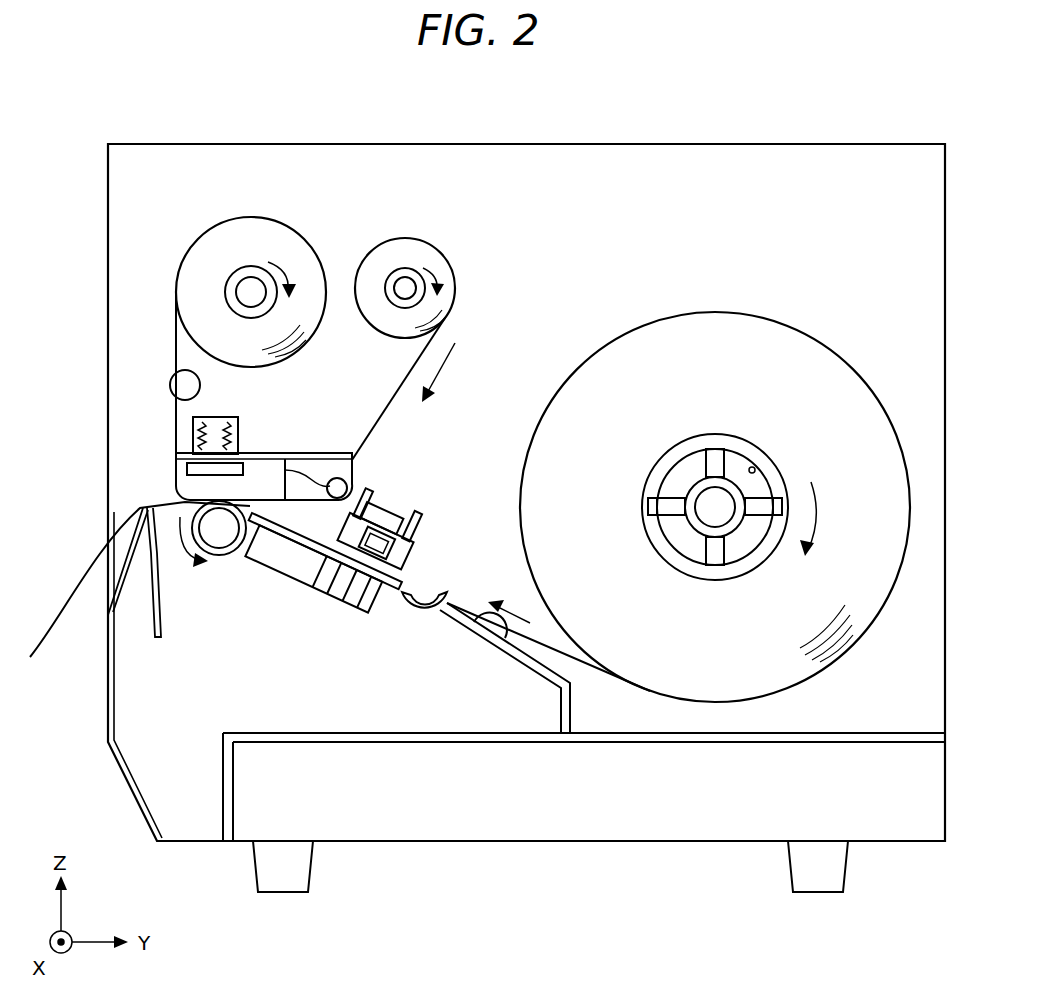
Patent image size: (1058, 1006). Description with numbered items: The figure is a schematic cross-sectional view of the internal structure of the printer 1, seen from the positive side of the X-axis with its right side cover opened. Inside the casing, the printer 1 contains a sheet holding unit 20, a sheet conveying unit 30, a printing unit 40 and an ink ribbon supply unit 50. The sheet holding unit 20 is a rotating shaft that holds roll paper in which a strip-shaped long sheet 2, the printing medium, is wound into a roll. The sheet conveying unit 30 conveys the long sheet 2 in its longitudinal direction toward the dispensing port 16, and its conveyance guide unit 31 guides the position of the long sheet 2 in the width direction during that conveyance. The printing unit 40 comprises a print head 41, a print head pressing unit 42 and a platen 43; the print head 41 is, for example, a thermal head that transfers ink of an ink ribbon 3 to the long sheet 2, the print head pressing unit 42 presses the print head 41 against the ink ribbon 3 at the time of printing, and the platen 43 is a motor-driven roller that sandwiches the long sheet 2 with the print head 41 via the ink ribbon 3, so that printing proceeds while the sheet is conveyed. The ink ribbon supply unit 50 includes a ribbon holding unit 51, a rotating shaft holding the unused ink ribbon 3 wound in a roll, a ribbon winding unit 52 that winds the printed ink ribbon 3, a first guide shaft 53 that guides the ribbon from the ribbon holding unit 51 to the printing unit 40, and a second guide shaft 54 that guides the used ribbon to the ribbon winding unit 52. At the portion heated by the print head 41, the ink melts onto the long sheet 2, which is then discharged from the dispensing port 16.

The printer 1 is at (740, 118).
The long sheet 2 is at (597, 667).
The ink ribbon 3 is at (172, 318).
The dispensing port 16 is at (85, 498).
The sheet holding unit 20 is at (754, 468).
The sheet conveying unit 30 is at (347, 622).
The conveyance guide unit 31 is at (308, 556).
The printing unit 40 is at (278, 432).
The print head 41 is at (185, 458).
The print head pressing unit 42 is at (236, 418).
The platen 43 is at (220, 540).
The ink ribbon supply unit 50 is at (338, 205).
The ribbon holding unit 51 is at (405, 268).
The ribbon winding unit 52 is at (248, 268).
The first guide shaft 53 is at (345, 484).
The second guide shaft 54 is at (168, 378).